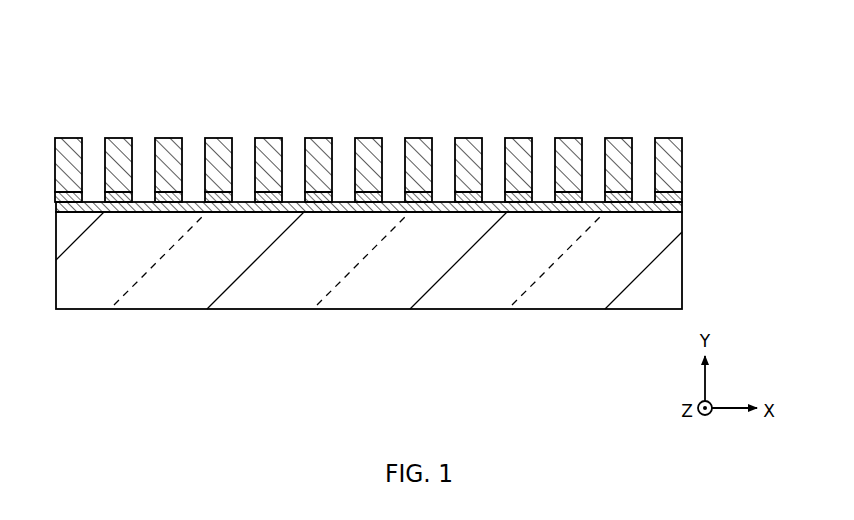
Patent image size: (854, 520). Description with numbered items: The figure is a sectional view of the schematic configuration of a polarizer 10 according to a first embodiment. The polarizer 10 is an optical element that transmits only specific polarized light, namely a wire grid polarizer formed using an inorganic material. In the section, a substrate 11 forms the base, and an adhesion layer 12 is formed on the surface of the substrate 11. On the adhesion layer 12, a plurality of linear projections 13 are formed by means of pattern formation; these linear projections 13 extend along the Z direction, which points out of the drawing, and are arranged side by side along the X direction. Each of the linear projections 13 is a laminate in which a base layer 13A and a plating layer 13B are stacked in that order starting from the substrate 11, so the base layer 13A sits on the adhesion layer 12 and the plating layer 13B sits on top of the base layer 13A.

The polarizer 10 is at (192, 69).
The substrate 11 is at (673, 258).
The adhesion layer 12 is at (683, 205).
The linear projections 13 is at (373, 119).
The base layer 13A is at (692, 70).
The plating layer 13B is at (622, 138).